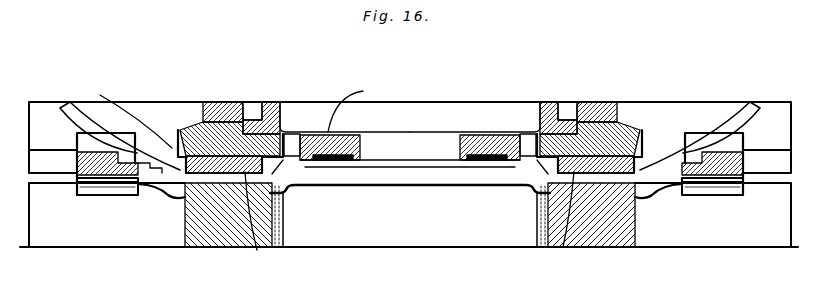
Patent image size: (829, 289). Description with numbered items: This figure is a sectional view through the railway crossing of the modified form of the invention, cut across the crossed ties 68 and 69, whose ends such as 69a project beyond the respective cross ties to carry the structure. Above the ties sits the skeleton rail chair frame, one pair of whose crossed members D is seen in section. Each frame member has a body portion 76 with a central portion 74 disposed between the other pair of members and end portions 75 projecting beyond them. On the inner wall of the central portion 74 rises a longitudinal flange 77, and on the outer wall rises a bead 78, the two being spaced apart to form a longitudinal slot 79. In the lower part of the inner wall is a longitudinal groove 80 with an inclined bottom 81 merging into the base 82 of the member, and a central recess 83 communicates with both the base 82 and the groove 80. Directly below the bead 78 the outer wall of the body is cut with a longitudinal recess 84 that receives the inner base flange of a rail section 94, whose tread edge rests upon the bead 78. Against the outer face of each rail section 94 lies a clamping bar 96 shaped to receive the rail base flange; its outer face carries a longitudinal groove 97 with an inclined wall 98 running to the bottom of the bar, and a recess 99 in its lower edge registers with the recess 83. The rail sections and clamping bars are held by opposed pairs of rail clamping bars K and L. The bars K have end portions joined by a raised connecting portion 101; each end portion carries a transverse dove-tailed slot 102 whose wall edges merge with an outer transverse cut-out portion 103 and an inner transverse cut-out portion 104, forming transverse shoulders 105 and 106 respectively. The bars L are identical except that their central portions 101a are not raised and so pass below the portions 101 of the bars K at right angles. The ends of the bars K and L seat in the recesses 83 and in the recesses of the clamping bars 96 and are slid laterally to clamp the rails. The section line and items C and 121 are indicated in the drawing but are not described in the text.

The ties 68 is at (223, 250).
The ties 69 is at (420, 242).
The ends of ties 69a is at (75, 238).
The central portion 74 is at (410, 117).
The end portions 75 is at (127, 110).
The body portion 76 is at (290, 140).
The longitudinal flange 77 is at (290, 102).
The bead 78 is at (230, 125).
The longitudinal slot 79 is at (248, 100).
The longitudinal groove 80 is at (320, 170).
The inclined bottom 81 is at (303, 178).
The base 82 is at (291, 188).
The central recess 83 is at (283, 190).
The longitudinal recess 84 is at (257, 250).
The rail section 94 is at (203, 102).
The clamping bar 96 is at (625, 128).
The longitudinal groove 97 is at (645, 150).
The inclined wall 98 is at (162, 175).
The recess 99 is at (640, 153).
The raised connecting portion 101 is at (353, 157).
The central portions 101a is at (436, 182).
The transverse dove-tailed slot 102 is at (126, 112).
The outer transverse cut-out portion 103 is at (168, 140).
The inner transverse cut-out portion 104 is at (347, 150).
The transverse shoulder 105 is at (174, 132).
The transverse shoulder 106 is at (359, 105).
The thin plate 121 is at (283, 250).
The section reference C is at (412, 101).
The crossed members D is at (270, 98).
The rail clamping bars K is at (457, 142).
The rail clamping bars L is at (401, 188).